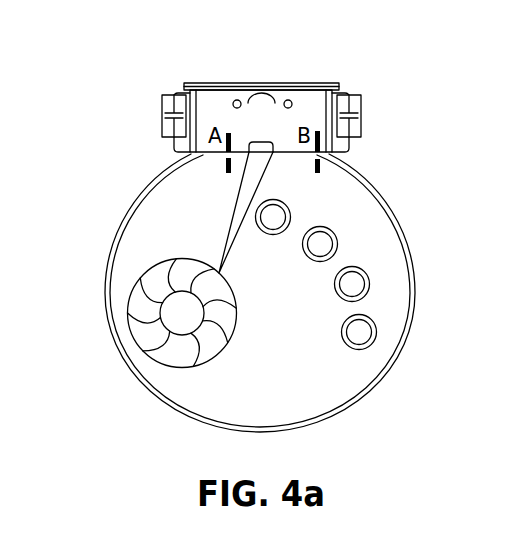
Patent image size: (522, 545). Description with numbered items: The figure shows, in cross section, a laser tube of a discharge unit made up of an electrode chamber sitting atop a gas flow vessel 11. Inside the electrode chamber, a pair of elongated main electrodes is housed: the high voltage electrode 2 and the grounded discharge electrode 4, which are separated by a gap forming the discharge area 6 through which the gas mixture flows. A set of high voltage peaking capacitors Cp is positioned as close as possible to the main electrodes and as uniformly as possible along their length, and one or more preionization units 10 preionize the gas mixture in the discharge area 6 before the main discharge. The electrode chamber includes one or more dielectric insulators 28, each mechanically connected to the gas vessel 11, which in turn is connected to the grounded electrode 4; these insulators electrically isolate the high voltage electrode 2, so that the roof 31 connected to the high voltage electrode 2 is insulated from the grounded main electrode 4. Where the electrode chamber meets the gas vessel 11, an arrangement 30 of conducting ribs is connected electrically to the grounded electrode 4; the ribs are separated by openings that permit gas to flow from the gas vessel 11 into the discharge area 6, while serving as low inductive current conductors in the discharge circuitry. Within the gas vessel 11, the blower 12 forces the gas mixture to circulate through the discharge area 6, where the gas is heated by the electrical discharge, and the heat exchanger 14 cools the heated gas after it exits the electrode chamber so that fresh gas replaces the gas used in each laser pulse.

The dielectric insulator 28 is at (318, 113).
The roof 31 is at (331, 81).
The preionization unit 10 is at (288, 100).
The high voltage electrode 2 is at (259, 93).
The discharge area 6 is at (270, 131).
The grounded discharge electrode 4 is at (268, 143).
The rib arrangement 30 is at (213, 160).
The gas vessel 11 is at (383, 198).
The heat exchanger 14 is at (330, 218).
The blower 12 is at (234, 300).
The peaking capacitors Cp is at (262, 122).